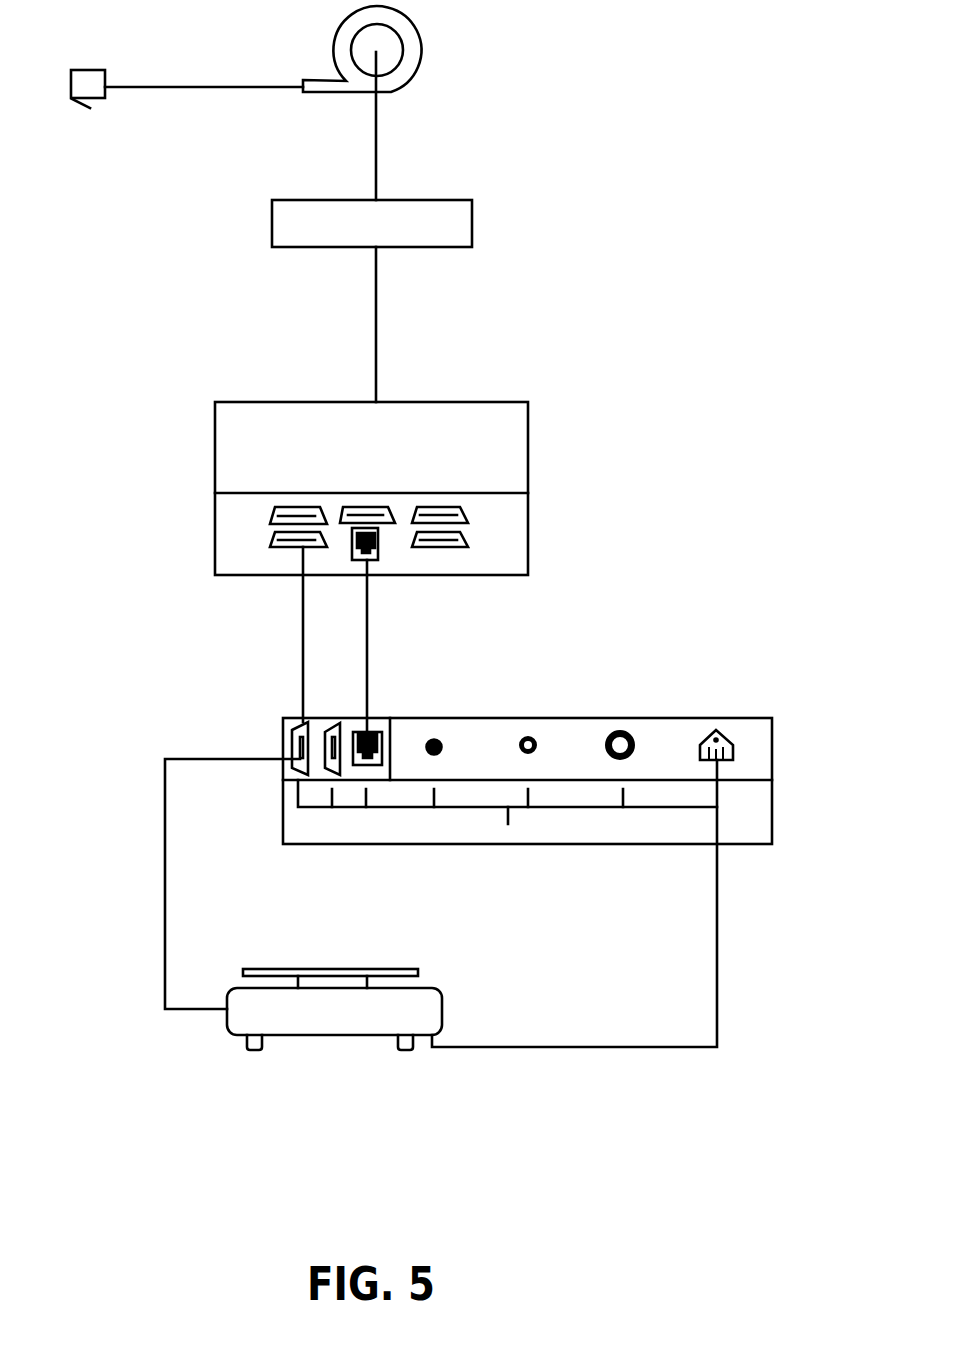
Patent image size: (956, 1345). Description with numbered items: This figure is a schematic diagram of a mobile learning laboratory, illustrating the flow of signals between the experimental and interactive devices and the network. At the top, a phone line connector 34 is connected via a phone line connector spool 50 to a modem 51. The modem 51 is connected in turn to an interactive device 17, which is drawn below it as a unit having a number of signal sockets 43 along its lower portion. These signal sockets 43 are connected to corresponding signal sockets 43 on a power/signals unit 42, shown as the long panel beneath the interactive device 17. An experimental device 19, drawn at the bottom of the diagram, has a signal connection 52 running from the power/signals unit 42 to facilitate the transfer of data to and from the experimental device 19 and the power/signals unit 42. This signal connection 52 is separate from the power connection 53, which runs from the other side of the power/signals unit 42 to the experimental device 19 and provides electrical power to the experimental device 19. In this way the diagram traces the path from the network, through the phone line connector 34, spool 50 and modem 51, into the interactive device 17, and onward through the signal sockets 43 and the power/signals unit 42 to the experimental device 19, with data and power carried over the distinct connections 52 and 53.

The phone line connector 34 is at (187, 65).
The phone line connector spool 50 is at (383, 103).
The modem 51 is at (402, 301).
The interactive device 17 is at (405, 567).
The signal sockets 43 is at (295, 545).
The power/signals unit 42 is at (553, 781).
The signal connection 52 is at (212, 884).
The power connection 53 is at (596, 903).
The experimental device 19 is at (334, 1025).